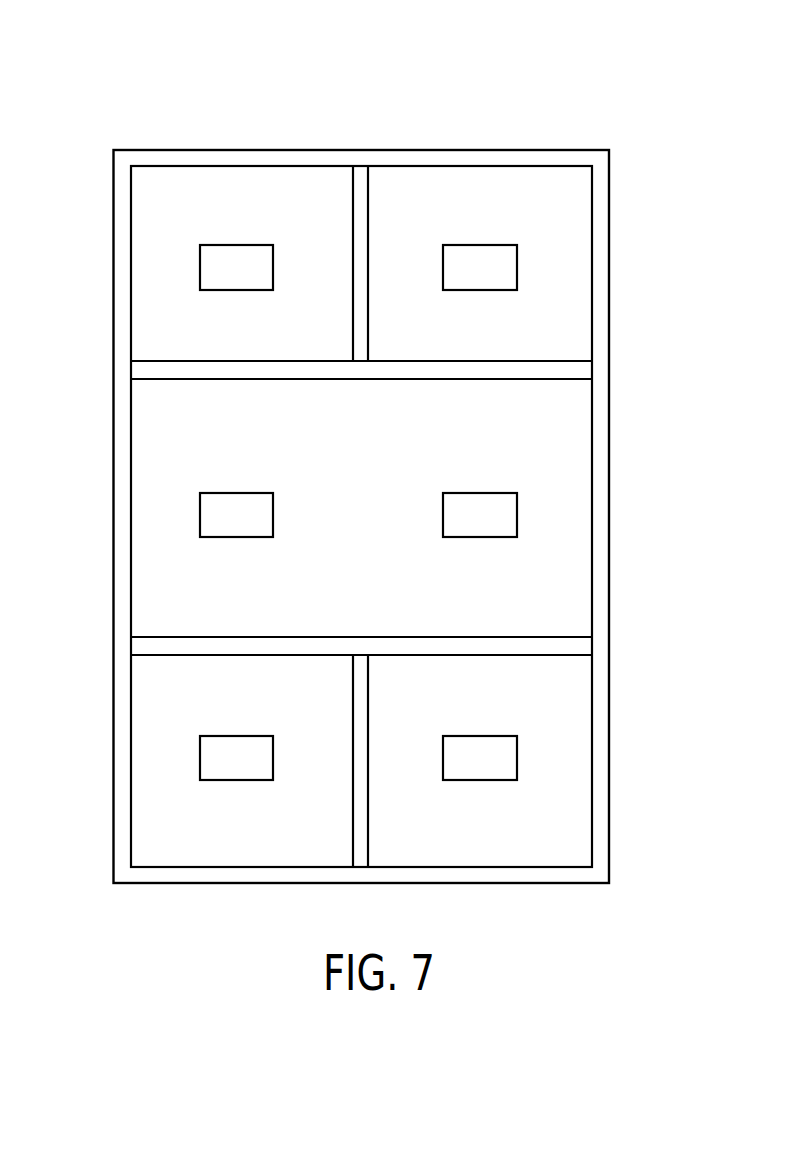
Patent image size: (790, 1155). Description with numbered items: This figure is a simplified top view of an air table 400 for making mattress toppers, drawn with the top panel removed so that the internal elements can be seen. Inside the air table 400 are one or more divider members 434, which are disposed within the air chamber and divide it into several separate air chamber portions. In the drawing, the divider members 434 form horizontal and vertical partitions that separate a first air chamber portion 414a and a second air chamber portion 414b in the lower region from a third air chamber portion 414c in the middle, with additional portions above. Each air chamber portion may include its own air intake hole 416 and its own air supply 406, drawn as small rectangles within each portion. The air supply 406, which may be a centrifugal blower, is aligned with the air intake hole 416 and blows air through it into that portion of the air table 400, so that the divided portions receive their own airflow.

The air table 400 is at (538, 93).
The divider member 434 is at (573, 370).
The first air chamber portion 414a is at (572, 823).
The second air chamber portion 414b is at (138, 800).
The air chamber portion 414c is at (138, 565).
The air intake hole 416 is at (515, 737).
The air supply 406 is at (480, 758).